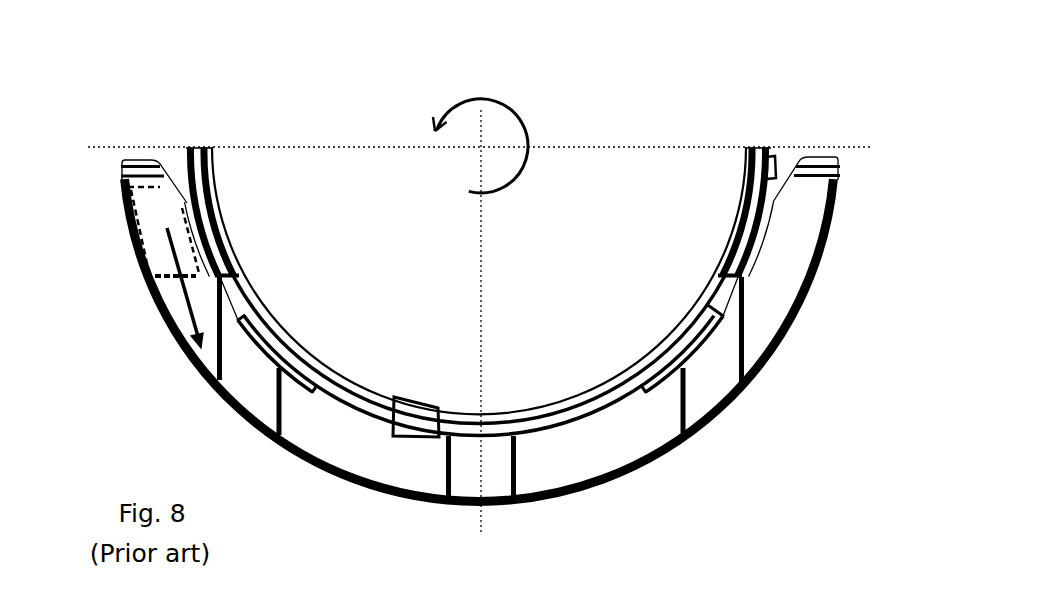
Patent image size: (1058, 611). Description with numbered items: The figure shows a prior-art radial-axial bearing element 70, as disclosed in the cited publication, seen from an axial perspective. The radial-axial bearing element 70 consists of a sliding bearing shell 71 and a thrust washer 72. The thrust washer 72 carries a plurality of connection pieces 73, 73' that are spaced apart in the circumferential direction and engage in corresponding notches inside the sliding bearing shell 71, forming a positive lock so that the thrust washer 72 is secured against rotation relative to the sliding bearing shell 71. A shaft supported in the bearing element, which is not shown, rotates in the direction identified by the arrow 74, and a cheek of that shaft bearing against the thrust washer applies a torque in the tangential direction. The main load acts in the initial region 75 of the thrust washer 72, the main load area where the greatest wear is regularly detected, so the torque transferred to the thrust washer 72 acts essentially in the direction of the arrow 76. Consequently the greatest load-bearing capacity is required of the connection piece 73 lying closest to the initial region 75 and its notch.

The radial-axial bearing element 70 is at (198, 106).
The sliding bearing shell 71 is at (742, 184).
The thrust washer 72 is at (810, 198).
The connection piece 73 is at (167, 313).
The connection piece 73' is at (413, 493).
The arrow 74 is at (480, 134).
The initial region 75 is at (132, 207).
The arrow 76 is at (190, 302).